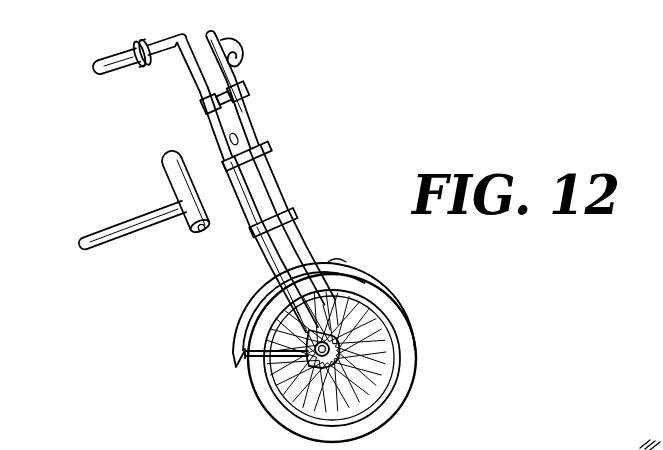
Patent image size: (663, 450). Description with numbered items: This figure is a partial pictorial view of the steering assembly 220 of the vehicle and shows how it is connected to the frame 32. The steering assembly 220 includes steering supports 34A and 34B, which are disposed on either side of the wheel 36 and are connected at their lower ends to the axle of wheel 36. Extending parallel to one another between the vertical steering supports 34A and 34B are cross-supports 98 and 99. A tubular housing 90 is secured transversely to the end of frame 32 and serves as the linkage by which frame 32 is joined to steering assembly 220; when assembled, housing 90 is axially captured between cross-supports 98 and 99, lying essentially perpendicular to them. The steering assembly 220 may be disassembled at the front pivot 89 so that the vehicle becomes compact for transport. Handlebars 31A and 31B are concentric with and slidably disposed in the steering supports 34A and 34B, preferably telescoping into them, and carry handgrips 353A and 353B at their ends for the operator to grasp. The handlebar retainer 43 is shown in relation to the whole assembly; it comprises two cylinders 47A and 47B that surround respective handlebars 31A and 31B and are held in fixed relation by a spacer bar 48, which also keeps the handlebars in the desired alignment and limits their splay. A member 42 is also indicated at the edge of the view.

The handgrip 353A is at (110, 56).
The handgrip 353B is at (242, 57).
The handlebar retainer 43 is at (176, 89).
The cylinder 47A is at (200, 104).
The cylinder 47B is at (249, 94).
The spacer bar 48 is at (238, 93).
The handlebar 31A is at (216, 132).
The handlebar 31B is at (257, 130).
The cross-support 98 is at (270, 156).
The cross-support 99 is at (296, 224).
The front pivot 89 is at (292, 177).
The steering support 34A is at (252, 212).
The steering support 34B is at (285, 208).
The tubular housing 90 is at (174, 190).
The frame 32 is at (137, 246).
The steering assembly 220 is at (195, 282).
The wheel 36 is at (378, 291).
The frame member 42 is at (640, 448).